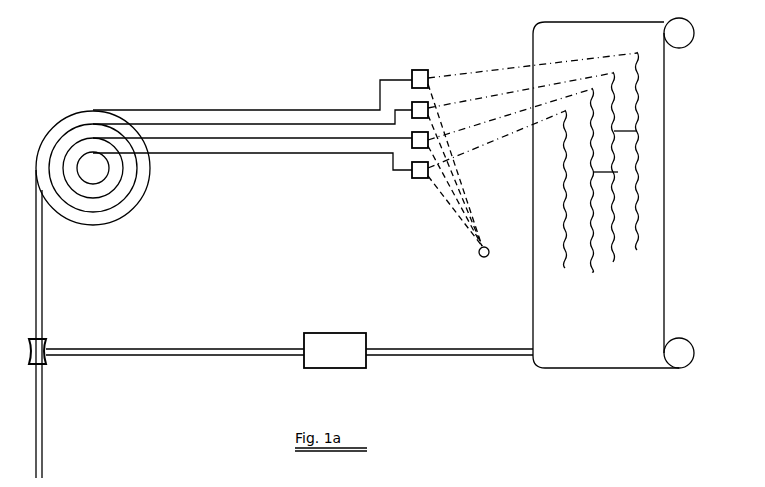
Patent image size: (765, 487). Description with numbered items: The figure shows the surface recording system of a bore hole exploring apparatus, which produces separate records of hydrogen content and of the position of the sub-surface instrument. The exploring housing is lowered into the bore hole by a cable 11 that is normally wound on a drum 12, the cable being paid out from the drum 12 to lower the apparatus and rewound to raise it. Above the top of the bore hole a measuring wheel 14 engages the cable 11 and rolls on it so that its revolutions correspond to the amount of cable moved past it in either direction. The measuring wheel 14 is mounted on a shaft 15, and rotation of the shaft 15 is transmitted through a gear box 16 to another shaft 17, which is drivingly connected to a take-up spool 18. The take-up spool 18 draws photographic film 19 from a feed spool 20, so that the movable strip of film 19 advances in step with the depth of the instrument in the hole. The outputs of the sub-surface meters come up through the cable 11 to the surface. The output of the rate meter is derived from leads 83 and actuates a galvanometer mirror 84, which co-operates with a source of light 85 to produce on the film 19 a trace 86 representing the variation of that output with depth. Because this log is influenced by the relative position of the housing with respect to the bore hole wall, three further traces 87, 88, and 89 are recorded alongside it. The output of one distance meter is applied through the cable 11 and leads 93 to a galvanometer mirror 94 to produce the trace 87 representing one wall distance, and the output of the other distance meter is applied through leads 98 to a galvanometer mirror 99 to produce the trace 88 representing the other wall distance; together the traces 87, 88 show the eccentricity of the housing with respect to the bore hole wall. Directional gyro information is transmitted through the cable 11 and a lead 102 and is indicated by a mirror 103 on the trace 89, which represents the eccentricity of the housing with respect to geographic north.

The cable 11 is at (44, 266).
The drum 12 is at (142, 200).
The measuring wheel 14 is at (47, 340).
The shaft 15 is at (180, 356).
The gear box 16 is at (337, 362).
The shaft 17 is at (450, 356).
The take-up spool 18 is at (680, 365).
The photographic film 19 is at (660, 293).
The feed spool 20 is at (690, 42).
The leads 83 is at (307, 110).
The galvanometer mirror 84 is at (419, 70).
The source of light 85 is at (484, 258).
The trace 86 is at (640, 108).
The trace 87 is at (645, 136).
The trace 88 is at (618, 173).
The trace 89 is at (565, 222).
The leads 93 is at (230, 124).
The galvanometer mirror 94 is at (430, 108).
The leads 98 is at (260, 138).
The galvanometer mirror 99 is at (430, 140).
The lead 102 is at (357, 153).
The mirror 103 is at (420, 178).